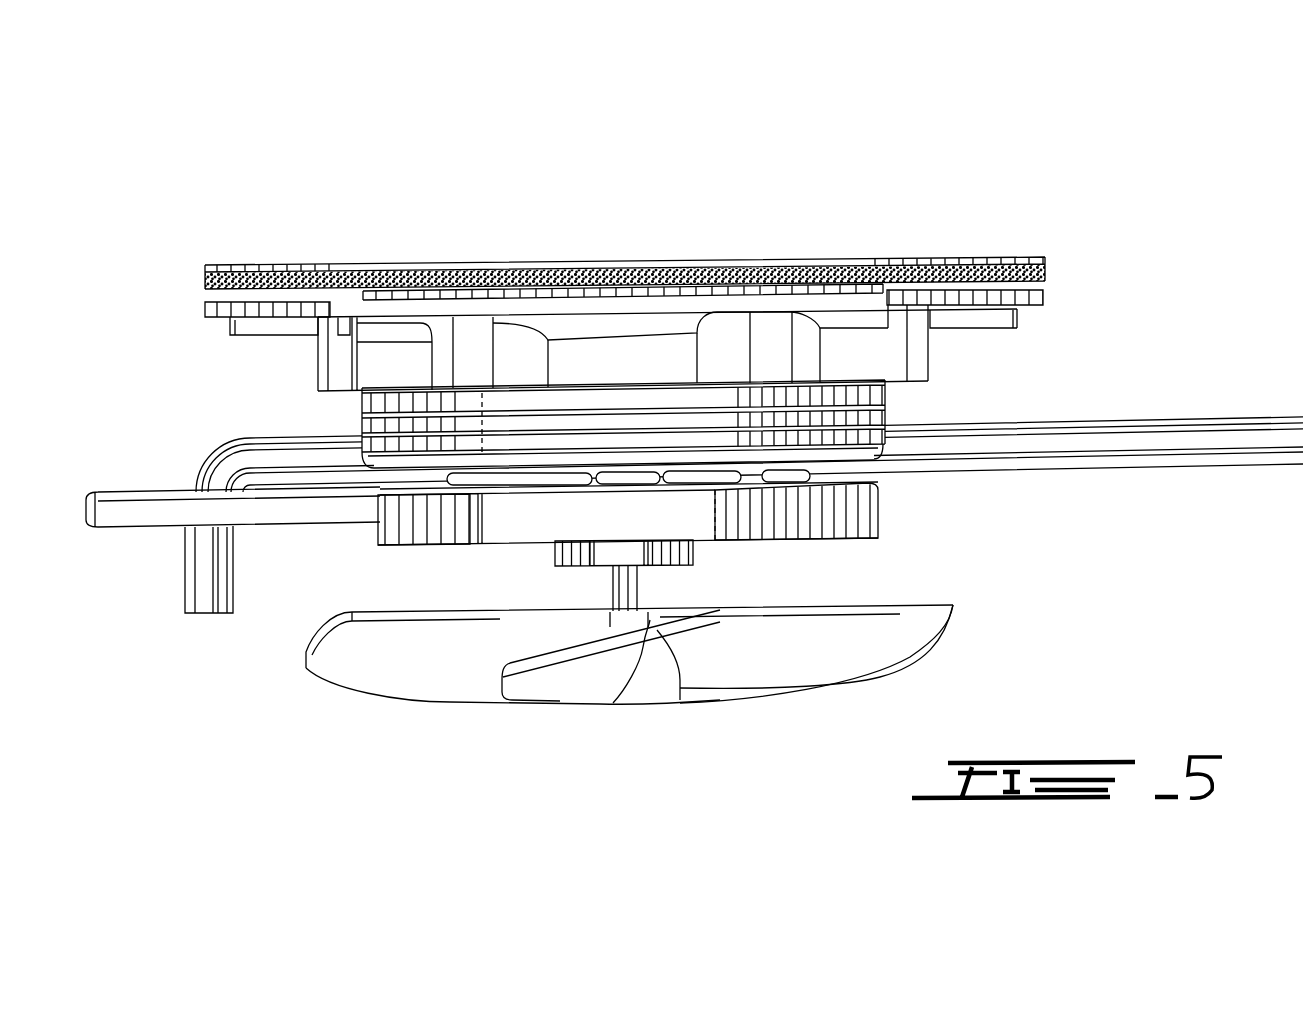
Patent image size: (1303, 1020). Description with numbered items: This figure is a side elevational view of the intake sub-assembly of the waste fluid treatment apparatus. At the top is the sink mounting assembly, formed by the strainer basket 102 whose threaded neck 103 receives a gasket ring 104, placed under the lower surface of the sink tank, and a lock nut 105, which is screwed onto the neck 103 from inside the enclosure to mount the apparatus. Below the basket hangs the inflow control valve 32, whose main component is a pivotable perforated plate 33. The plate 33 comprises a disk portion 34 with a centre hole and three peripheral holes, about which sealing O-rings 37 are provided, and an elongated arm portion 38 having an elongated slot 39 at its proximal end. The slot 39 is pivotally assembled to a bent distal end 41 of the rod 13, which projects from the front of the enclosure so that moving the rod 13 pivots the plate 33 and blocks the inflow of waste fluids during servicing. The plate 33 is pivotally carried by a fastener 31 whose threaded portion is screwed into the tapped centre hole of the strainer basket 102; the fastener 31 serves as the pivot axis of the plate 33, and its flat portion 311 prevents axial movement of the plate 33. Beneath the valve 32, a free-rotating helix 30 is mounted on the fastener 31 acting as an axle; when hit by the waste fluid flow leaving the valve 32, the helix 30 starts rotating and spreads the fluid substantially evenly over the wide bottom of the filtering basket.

The strainer basket 102 is at (905, 257).
The gasket ring 104 is at (1040, 272).
The lock nut 105 is at (870, 355).
The threaded neck 103 is at (362, 422).
The rod 13 is at (227, 470).
The elongated slot 39 is at (192, 490).
The elongated arm portion 38 is at (130, 515).
The bent distal end 41 is at (200, 585).
The sealing O-rings 37 is at (762, 472).
The pivotable perforated plate 33 is at (338, 549).
The disk portion 34 is at (475, 513).
The inflow control valve 32 is at (912, 492).
The flat portion 311 is at (690, 550).
The fastener 31 is at (622, 587).
The free-rotating helix 30 is at (910, 657).